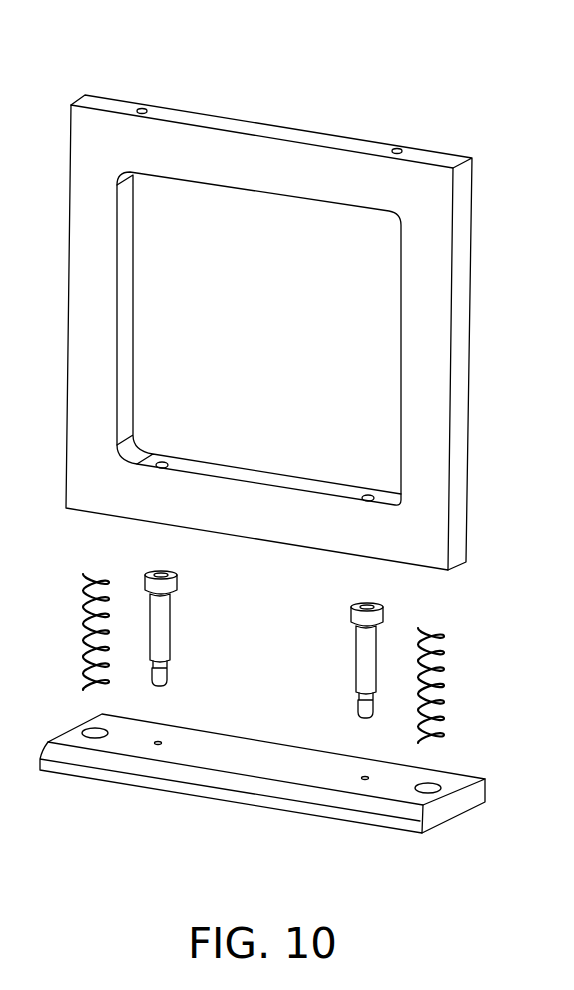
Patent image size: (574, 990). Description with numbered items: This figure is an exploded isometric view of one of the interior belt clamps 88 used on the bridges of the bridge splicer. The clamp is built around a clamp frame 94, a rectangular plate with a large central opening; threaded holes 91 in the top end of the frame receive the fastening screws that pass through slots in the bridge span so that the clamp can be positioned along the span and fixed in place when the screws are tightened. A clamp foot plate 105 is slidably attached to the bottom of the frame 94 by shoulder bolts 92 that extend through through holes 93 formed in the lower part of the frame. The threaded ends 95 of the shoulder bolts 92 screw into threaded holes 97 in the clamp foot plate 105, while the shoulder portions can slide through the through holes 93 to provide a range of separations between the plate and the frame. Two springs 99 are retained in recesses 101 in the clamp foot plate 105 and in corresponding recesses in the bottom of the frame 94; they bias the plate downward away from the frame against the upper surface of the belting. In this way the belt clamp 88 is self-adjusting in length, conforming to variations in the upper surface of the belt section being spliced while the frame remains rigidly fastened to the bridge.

The belt clamp 88 is at (383, 75).
The threaded hole 91 is at (401, 148).
The shoulder bolt 92 is at (183, 628).
The through hole 93 is at (166, 461).
The clamp frame 94 is at (458, 331).
The threaded end 95 is at (168, 669).
The threaded hole 97 is at (161, 742).
The spring 99 is at (447, 641).
The recess 101 is at (436, 786).
The clamp foot plate 105 is at (455, 808).